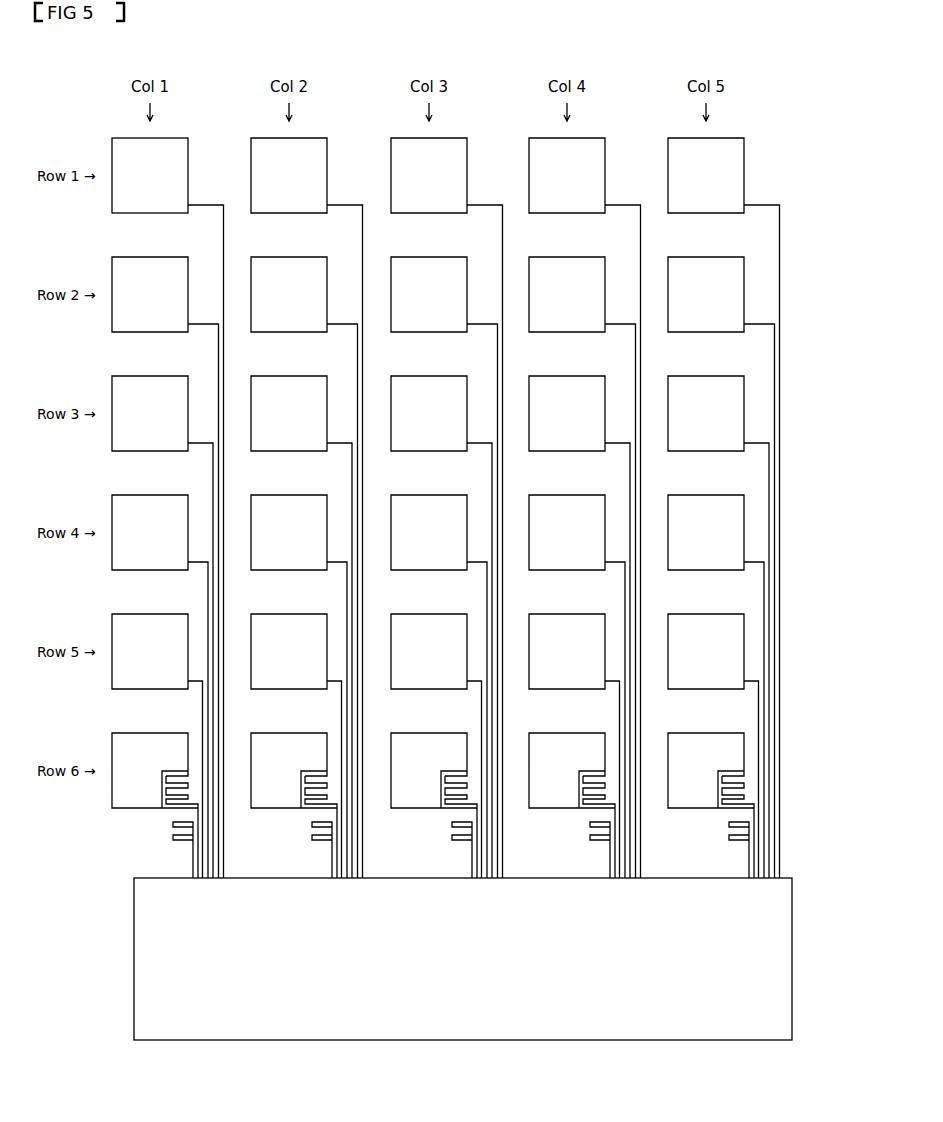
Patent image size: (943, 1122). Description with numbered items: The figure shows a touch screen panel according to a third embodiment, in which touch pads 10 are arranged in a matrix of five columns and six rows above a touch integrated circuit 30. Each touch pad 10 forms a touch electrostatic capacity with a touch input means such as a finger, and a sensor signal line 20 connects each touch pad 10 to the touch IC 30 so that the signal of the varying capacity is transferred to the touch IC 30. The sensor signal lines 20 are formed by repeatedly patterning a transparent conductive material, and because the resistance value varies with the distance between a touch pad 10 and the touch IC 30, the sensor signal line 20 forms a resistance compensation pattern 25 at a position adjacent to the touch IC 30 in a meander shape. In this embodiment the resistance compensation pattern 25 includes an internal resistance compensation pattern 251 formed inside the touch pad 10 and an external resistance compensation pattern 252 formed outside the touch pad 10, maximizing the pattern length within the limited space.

The touch pad 10 is at (112, 138).
The sensor signal line 20 is at (205, 203).
The resistance compensation pattern 25 is at (145, 805).
The internal resistance compensation pattern 251 is at (166, 781).
The external resistance compensation pattern 252 is at (173, 827).
The touch integrated circuit 30 is at (792, 879).